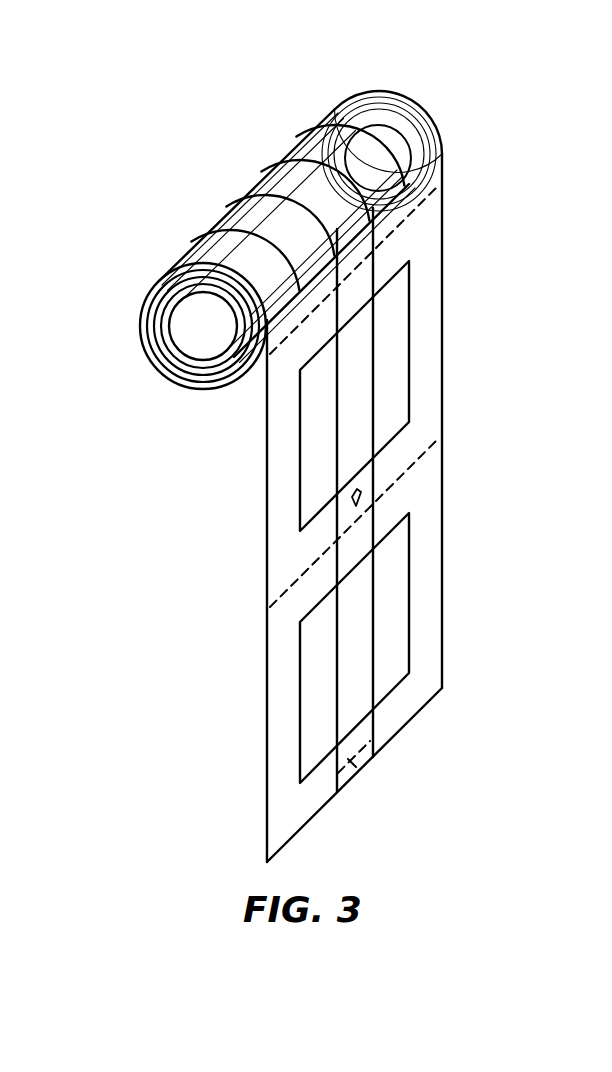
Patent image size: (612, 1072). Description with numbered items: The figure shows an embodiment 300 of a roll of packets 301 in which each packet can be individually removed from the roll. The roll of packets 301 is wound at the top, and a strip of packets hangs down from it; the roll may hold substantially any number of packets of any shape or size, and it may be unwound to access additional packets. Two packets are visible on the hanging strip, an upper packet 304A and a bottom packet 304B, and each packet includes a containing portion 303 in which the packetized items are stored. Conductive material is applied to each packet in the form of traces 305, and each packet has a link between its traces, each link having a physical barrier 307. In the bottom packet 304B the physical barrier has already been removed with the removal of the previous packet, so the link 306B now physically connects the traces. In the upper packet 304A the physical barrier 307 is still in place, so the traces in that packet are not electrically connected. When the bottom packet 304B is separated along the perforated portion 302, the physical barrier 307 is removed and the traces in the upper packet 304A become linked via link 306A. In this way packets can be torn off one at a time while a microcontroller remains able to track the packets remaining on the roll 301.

The embodiment 300 is at (90, 93).
The roll of packets 301 is at (368, 90).
The perforated portion 302 is at (421, 455).
The containing portion 303 is at (400, 332).
The upper packet 304A is at (442, 300).
The bottom packet 304B is at (442, 527).
The traces 305 is at (375, 588).
The link 306A is at (363, 488).
The link 306B is at (347, 763).
The physical barrier 307 is at (357, 503).